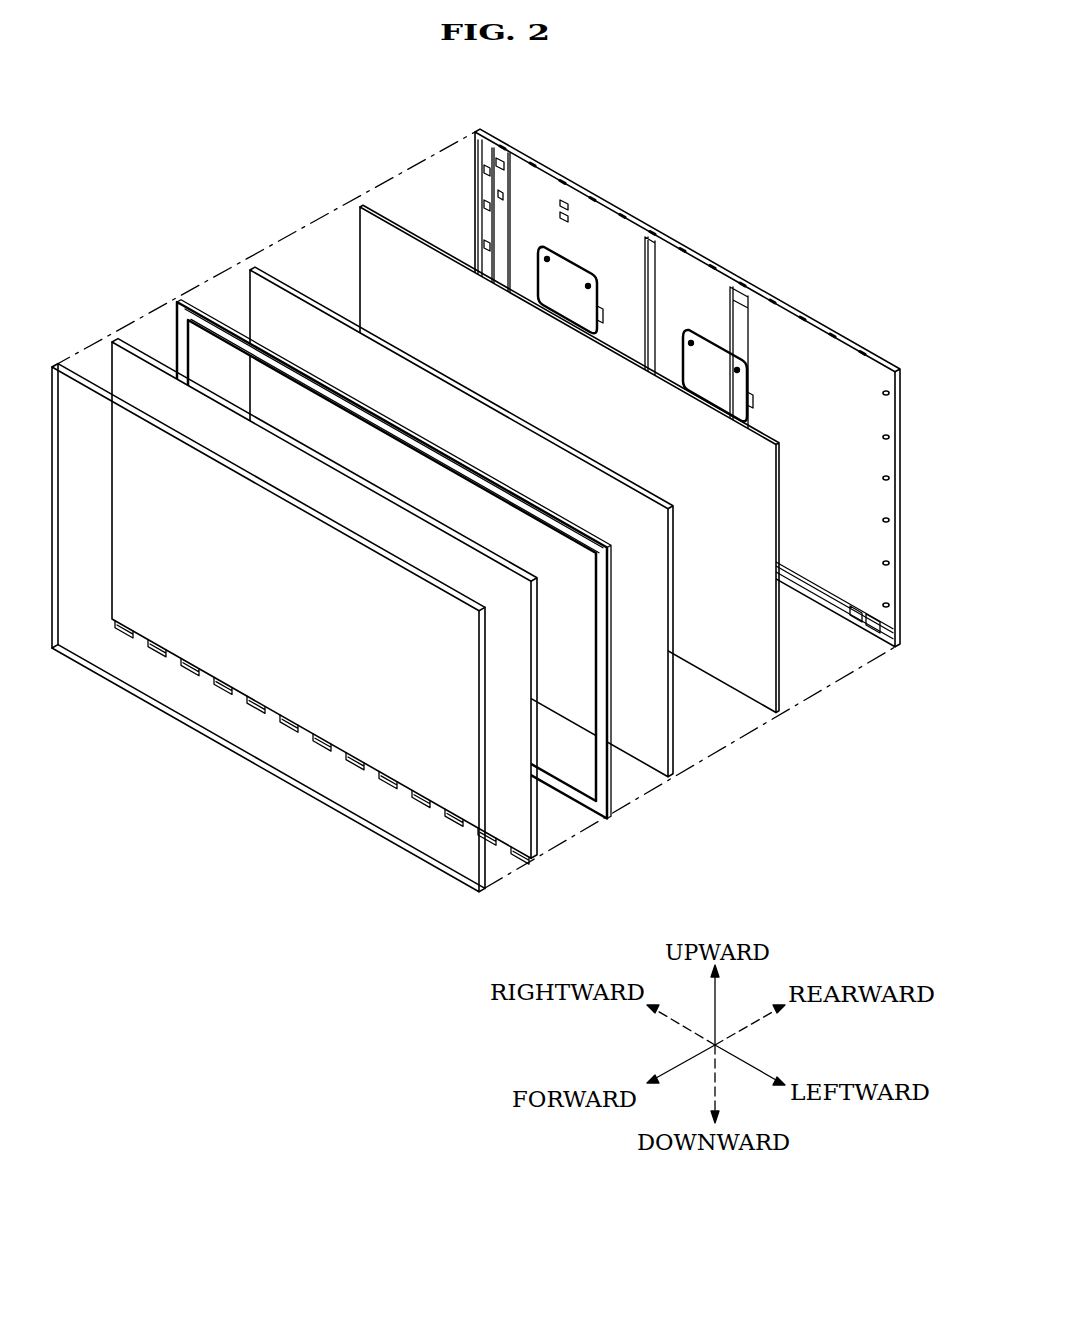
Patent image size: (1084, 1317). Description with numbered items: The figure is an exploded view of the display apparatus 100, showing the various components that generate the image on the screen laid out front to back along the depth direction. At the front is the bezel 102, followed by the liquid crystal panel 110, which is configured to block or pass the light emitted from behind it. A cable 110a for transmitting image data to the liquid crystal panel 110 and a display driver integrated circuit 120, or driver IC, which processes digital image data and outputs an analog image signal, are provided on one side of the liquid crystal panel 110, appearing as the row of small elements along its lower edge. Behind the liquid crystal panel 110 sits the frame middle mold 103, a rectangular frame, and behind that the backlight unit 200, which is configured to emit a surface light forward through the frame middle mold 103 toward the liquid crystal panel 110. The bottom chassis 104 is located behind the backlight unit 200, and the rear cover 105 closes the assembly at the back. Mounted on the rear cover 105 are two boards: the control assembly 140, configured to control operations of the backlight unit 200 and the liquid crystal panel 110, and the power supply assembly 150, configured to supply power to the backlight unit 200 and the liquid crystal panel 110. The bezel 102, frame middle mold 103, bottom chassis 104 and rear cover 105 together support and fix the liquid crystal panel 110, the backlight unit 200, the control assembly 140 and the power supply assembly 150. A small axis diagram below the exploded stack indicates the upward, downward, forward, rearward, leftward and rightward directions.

The display device 100 is at (160, 254).
The bezel 102 is at (484, 893).
The liquid crystal panel 110 is at (358, 628).
The cable 110a is at (214, 768).
The display driver integrated circuit 120 is at (260, 661).
The frame middle mold 103 is at (609, 819).
The backlight unit 200 is at (670, 777).
The bottom chassis 104 is at (778, 713).
The rear cover 105 is at (896, 648).
The control assembly 140 is at (697, 349).
The power supply assembly 150 is at (570, 276).